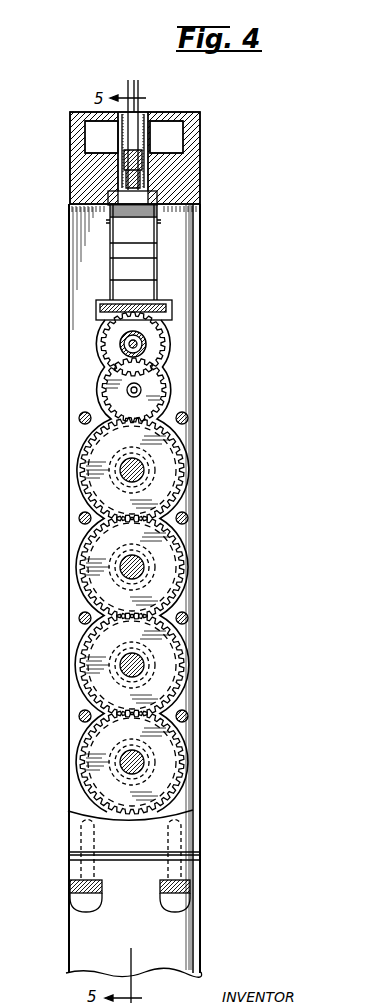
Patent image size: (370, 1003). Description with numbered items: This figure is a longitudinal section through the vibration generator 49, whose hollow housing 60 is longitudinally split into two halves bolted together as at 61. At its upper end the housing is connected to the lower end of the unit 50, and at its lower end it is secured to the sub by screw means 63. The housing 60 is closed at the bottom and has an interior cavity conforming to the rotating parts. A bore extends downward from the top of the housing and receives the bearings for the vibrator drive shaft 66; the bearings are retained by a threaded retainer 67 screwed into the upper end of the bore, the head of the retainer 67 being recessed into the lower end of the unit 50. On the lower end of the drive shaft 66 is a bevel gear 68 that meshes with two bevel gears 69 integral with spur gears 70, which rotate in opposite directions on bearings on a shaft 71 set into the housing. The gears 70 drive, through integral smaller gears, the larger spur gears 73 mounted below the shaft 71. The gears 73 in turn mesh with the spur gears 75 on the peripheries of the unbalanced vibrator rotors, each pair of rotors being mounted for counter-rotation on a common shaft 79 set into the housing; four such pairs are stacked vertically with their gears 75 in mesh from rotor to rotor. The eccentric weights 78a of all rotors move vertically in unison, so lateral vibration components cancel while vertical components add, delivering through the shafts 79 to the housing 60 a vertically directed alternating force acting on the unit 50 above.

The vibration generator 49 is at (205, 239).
The unit 50 is at (64, 166).
The hollow housing 60 is at (191, 296).
The bolts 61 is at (189, 418).
The screw means 63 is at (75, 883).
The vibrator drive shaft 66 is at (133, 252).
The threaded retainer 67 is at (132, 198).
The bevel gear 68 is at (165, 305).
The bevel gears 69 is at (121, 343).
The spur gears 70 is at (147, 344).
The shaft 71 is at (123, 349).
The larger spur gears 73 is at (152, 394).
The spur gears 75 is at (154, 472).
The eccentric weights 78a is at (87, 484).
The common shaft 79 is at (121, 466).